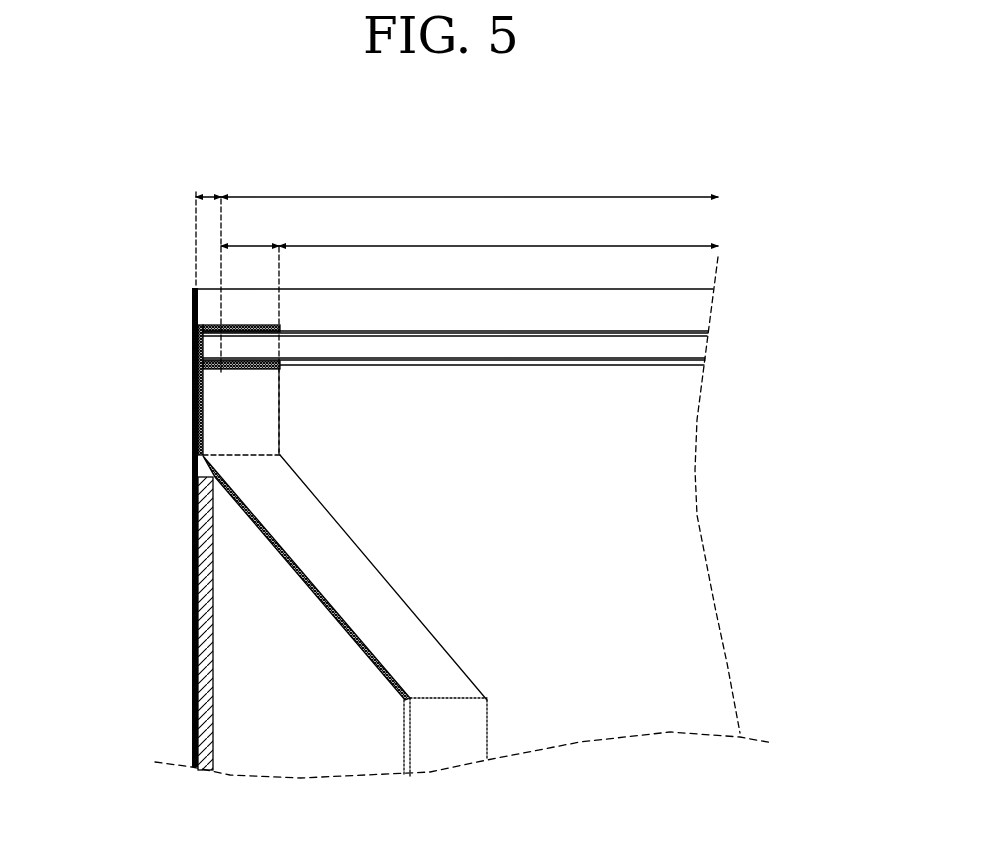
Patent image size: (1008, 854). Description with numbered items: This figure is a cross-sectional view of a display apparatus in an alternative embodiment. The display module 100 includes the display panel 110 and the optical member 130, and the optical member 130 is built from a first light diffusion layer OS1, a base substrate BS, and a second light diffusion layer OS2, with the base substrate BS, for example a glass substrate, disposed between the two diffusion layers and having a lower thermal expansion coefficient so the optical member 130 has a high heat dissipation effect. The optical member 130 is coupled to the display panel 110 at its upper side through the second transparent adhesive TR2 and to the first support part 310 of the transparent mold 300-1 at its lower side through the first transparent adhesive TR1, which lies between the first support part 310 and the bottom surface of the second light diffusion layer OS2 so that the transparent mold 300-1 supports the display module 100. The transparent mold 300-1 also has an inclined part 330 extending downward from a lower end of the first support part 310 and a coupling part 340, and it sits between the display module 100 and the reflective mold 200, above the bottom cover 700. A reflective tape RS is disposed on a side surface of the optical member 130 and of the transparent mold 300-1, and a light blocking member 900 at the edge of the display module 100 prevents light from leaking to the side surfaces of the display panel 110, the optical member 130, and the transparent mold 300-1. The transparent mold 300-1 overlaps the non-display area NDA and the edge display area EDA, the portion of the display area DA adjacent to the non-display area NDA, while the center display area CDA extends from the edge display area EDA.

The light blocking member 900 is at (192, 291).
The display module 100 is at (549, 495).
The display panel 110 is at (700, 310).
The optical member 130 is at (523, 362).
The first light diffusion layer OS1 is at (705, 331).
The base substrate BS is at (705, 349).
The second light diffusion layer OS2 is at (705, 366).
The second transparent adhesive TR2 is at (197, 330).
The first transparent adhesive TR1 is at (197, 368).
The reflective tape RS is at (197, 402).
The transparent mold 300-1 is at (256, 572).
The first support part 310 is at (218, 436).
The inclined part 330 is at (271, 513).
The coupling part 340 is at (427, 720).
The bottom cover 700 is at (205, 690).
The reflective mold 200 is at (233, 738).
The non-display area NDA is at (208, 229).
The display area DA is at (469, 272).
The edge display area EDA is at (250, 337).
The center display area CDA is at (498, 232).